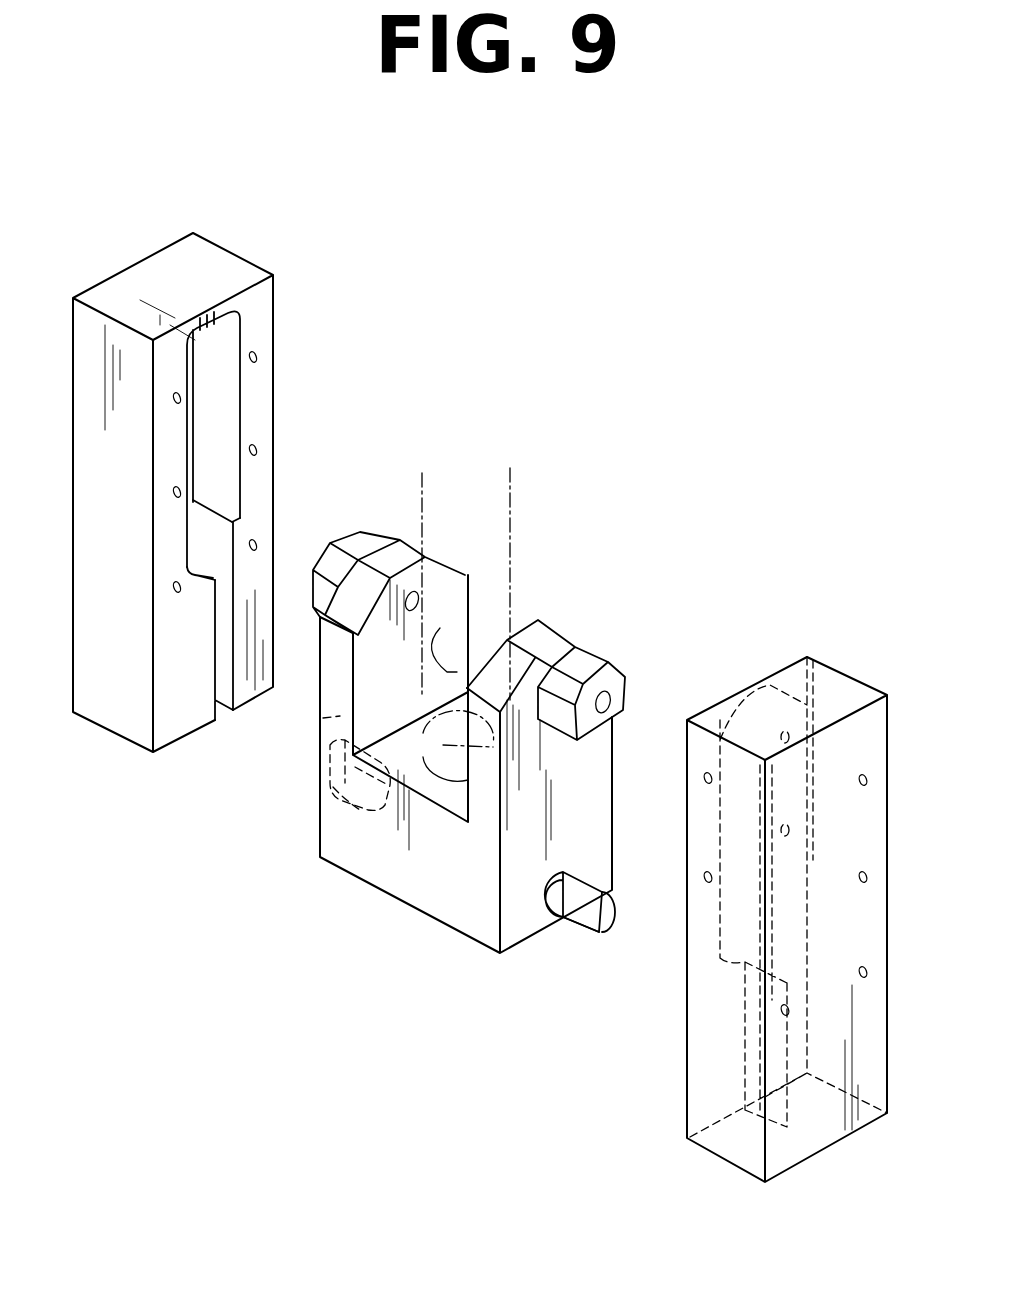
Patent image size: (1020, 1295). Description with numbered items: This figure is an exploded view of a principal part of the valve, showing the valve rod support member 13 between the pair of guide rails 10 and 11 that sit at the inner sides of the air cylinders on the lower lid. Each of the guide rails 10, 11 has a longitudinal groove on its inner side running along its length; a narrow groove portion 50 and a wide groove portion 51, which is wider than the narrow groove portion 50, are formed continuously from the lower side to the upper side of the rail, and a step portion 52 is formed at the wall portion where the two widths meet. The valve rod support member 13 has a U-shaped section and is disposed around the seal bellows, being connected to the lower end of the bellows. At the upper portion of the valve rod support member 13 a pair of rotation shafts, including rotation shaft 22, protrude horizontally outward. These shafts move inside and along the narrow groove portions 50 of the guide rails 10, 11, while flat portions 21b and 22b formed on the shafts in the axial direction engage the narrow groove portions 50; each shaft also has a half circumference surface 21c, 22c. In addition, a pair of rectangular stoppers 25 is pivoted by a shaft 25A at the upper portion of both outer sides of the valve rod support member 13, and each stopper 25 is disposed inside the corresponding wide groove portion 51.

The guide rail 10 is at (857, 673).
The guide rail 11 is at (233, 270).
The valve rod support member 13 is at (457, 898).
The flat portion 21b is at (333, 787).
The half circumference surface 21c is at (323, 718).
The rotation shaft 22 is at (357, 752).
The flat portion 22b is at (582, 912).
The half circumference surface 22c is at (617, 875).
The rectangular stopper 25 is at (358, 543).
The shaft 25A is at (420, 598).
The narrow groove portion 50 is at (223, 647).
The wide groove portion 51 is at (225, 407).
The step portion 52 is at (223, 502).